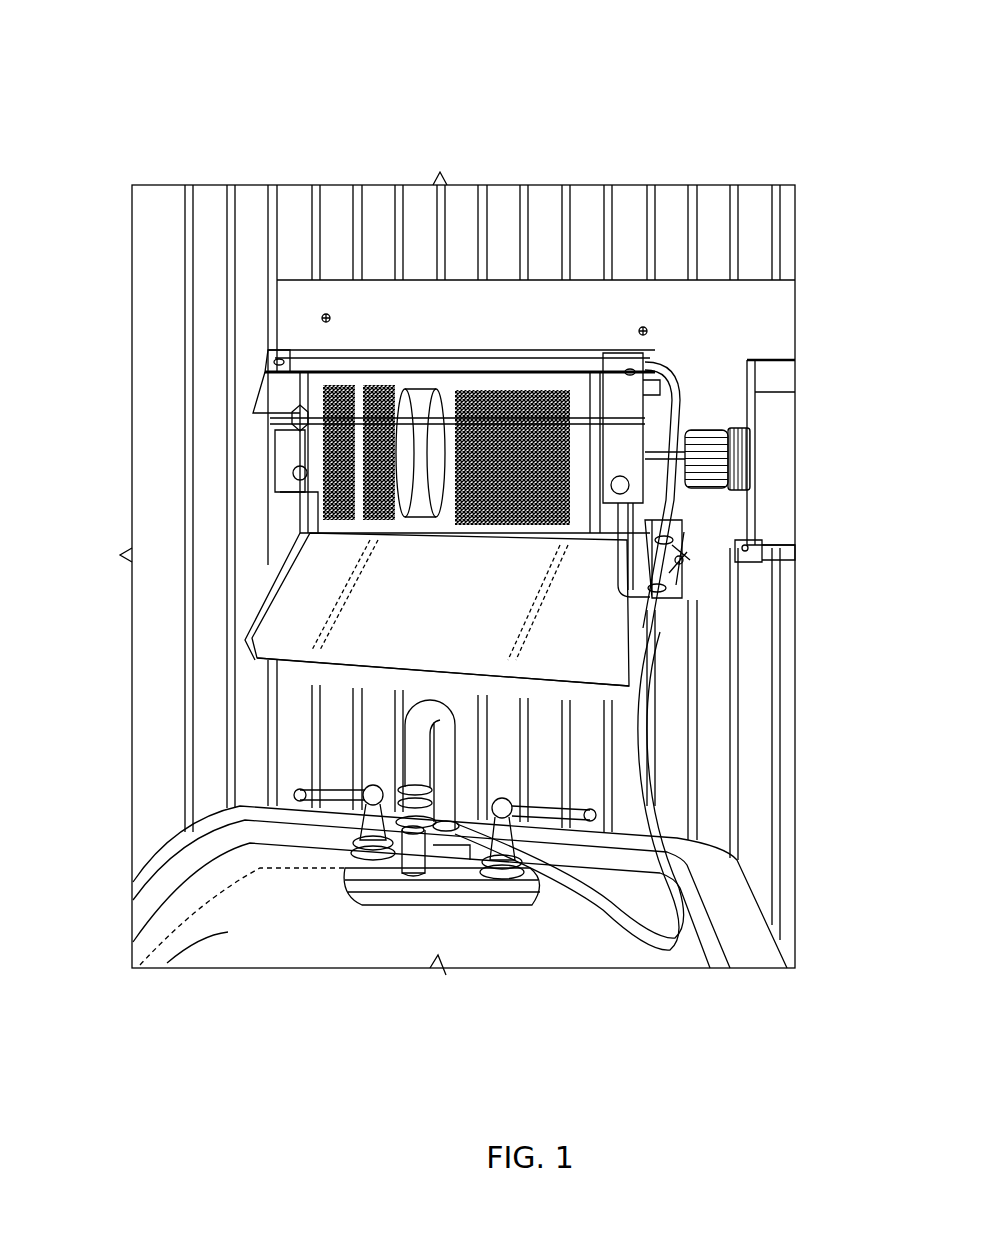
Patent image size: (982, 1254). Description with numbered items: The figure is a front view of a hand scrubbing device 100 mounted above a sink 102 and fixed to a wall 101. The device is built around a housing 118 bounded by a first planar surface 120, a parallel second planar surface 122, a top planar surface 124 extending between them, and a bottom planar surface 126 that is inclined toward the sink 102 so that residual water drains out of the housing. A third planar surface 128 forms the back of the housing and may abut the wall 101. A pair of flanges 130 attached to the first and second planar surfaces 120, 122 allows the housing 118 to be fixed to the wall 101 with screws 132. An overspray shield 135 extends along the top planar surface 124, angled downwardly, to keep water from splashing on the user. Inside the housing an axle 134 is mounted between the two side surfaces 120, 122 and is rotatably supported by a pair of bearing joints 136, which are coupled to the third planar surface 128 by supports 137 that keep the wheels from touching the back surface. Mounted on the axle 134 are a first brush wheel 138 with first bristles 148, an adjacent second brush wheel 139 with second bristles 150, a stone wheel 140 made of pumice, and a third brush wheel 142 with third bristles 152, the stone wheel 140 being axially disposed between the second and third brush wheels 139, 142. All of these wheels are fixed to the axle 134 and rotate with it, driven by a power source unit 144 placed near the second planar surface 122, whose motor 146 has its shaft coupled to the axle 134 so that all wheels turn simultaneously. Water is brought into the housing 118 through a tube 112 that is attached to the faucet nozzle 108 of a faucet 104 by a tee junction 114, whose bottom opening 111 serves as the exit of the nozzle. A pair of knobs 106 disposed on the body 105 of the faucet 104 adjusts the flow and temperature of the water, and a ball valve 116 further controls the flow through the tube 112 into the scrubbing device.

The scrubbing device 100 is at (313, 64).
The wall 101 is at (188, 680).
The sink 102 is at (165, 965).
The faucet 104 is at (412, 752).
The body 105 is at (345, 866).
The pair of knobs 106 is at (296, 793).
The faucet nozzle 108 is at (538, 852).
The bottom opening 111 is at (415, 884).
The tube 112 is at (653, 731).
The tee junction 114 is at (503, 905).
The ball valve 116 is at (678, 578).
The housing 118 is at (553, 296).
The first planar surface 120 is at (296, 470).
The second planar surface 122 is at (725, 430).
The top planar surface 124 is at (645, 283).
The bottom planar surface 126 is at (262, 655).
The third planar surface 128 is at (310, 528).
The pair of flanges 130 is at (655, 368).
The screws 132 is at (790, 556).
The axle 134 is at (752, 525).
The overspray shield 135 is at (288, 362).
The pair of bearing joints 136 is at (278, 433).
The supports 137 is at (684, 592).
The first brush wheel 138 is at (278, 372).
The second brush wheel 139 is at (292, 447).
The stone wheel 140 is at (382, 385).
The third brush wheel 142 is at (560, 393).
The power source unit 144 is at (768, 505).
The motor 146 is at (756, 457).
The first bristles 148 is at (300, 505).
The second bristles 150 is at (312, 533).
The third bristles 152 is at (430, 390).